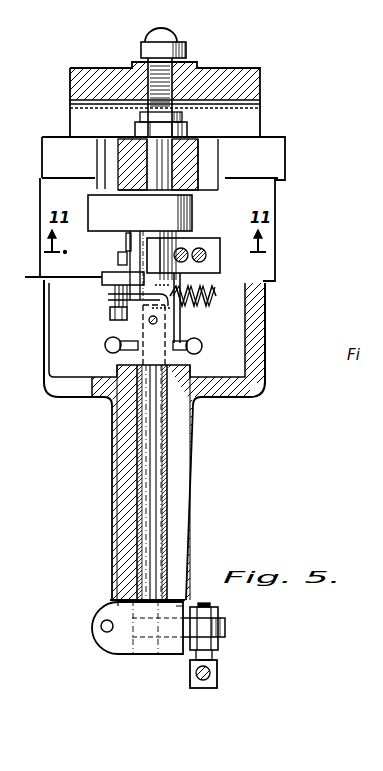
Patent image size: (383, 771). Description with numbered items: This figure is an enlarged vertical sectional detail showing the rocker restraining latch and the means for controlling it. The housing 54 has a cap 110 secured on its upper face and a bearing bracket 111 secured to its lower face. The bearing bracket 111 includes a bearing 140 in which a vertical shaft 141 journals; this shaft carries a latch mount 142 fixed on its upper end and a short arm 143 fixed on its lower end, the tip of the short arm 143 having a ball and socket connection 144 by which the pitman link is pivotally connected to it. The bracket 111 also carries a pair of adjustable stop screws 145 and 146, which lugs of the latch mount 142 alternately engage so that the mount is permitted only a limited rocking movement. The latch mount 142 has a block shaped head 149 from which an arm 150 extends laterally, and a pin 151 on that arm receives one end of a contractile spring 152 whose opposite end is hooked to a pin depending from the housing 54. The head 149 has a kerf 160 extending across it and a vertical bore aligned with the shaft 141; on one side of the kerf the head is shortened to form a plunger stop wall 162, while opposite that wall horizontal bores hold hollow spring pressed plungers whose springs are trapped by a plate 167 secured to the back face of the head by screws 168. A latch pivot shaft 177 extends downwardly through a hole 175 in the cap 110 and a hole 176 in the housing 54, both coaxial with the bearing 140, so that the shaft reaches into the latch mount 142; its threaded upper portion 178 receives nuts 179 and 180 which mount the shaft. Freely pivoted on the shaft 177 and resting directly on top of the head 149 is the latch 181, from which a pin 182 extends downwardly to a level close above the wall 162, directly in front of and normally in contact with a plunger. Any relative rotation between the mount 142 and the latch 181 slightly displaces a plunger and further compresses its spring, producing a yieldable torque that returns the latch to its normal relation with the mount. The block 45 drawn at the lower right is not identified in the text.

The nut 180 is at (163, 33).
The hole 175 is at (181, 57).
The threaded upper portion 178 is at (155, 78).
The cap 110 is at (243, 78).
The nut 179 is at (140, 121).
The hole 176 is at (184, 129).
The latch pivot shaft 177 is at (175, 160).
The housing 54 is at (273, 162).
The latch 181 is at (102, 203).
The head 149 is at (150, 240).
The screws 168 is at (201, 249).
The plate 167 is at (222, 270).
The pin 182 is at (126, 238).
The plunger stop wall 162 is at (119, 258).
The kerf 160 is at (106, 272).
The arm 150 is at (108, 285).
The pin 151 is at (108, 313).
The contractile spring 152 is at (216, 297).
The latch mount 142 is at (179, 325).
The bearing bracket 111 is at (255, 335).
The adjustable stop screw 146 is at (112, 352).
The adjustable stop screw 145 is at (196, 353).
The vertical shaft 141 is at (158, 443).
The bearing 140 is at (180, 508).
The ball and socket connection 144 is at (218, 645).
The short arm 143 is at (168, 637).
The link block 45 is at (218, 675).